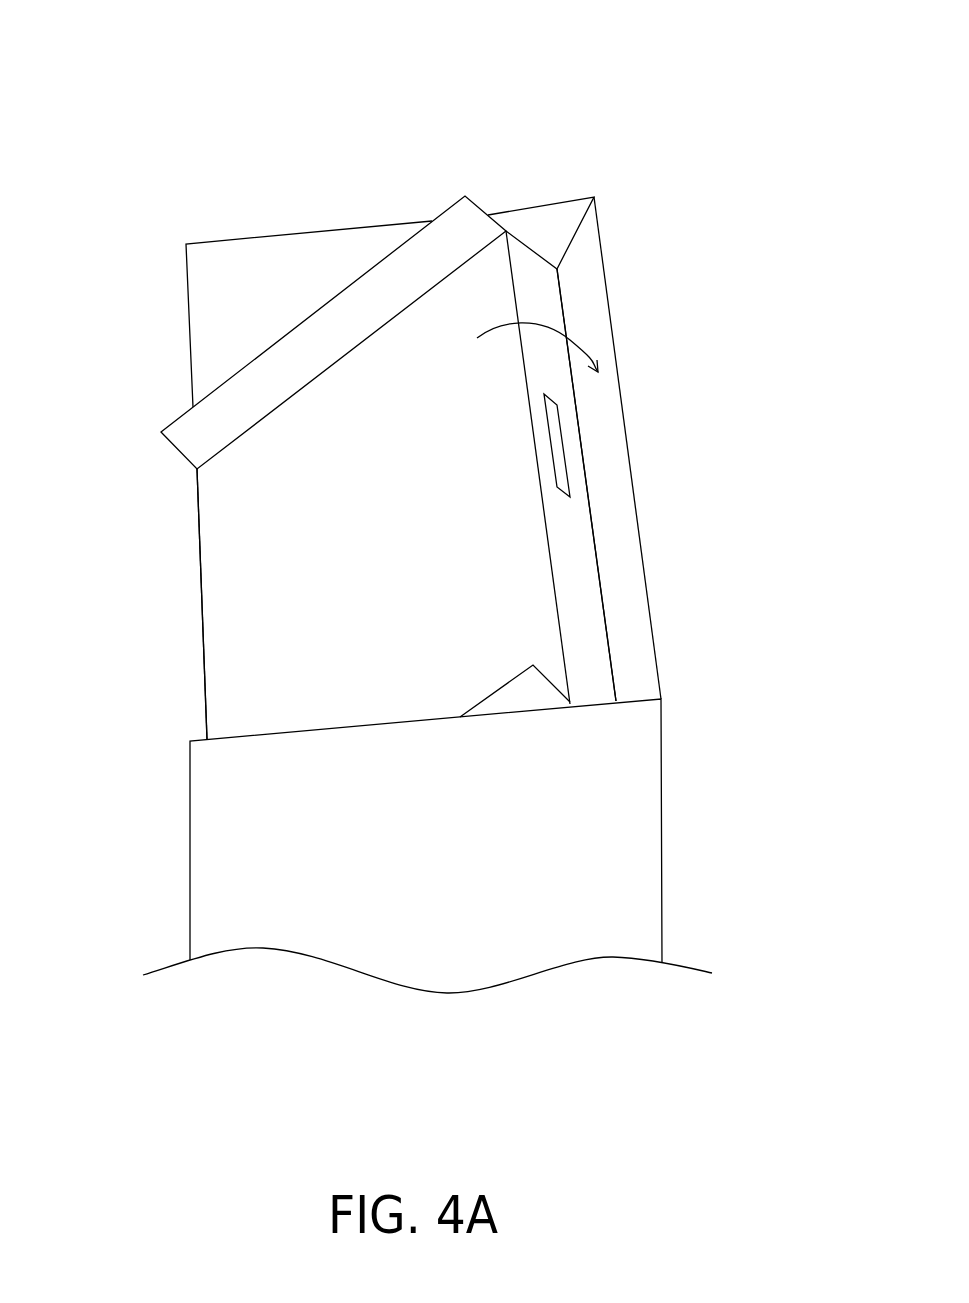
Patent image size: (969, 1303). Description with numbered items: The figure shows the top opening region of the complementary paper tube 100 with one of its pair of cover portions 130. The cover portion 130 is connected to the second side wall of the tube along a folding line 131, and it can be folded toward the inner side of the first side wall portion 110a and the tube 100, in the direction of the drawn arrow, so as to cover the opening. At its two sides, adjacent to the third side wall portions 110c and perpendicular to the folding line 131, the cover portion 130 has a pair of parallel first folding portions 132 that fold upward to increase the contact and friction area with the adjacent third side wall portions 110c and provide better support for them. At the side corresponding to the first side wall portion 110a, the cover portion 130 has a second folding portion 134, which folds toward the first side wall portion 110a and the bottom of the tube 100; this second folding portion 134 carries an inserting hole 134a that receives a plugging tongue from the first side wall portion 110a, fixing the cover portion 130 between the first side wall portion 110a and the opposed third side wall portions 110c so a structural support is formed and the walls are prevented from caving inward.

The complementary paper tube 100 is at (378, 170).
The first side wall portion 110a is at (599, 390).
The third side wall portions 110c is at (220, 282).
The cover portion 130 is at (250, 622).
The folding line 131 is at (198, 530).
The first folding portions 132 is at (472, 225).
The second folding portion 134 is at (575, 565).
The inserting hole 134a is at (557, 441).